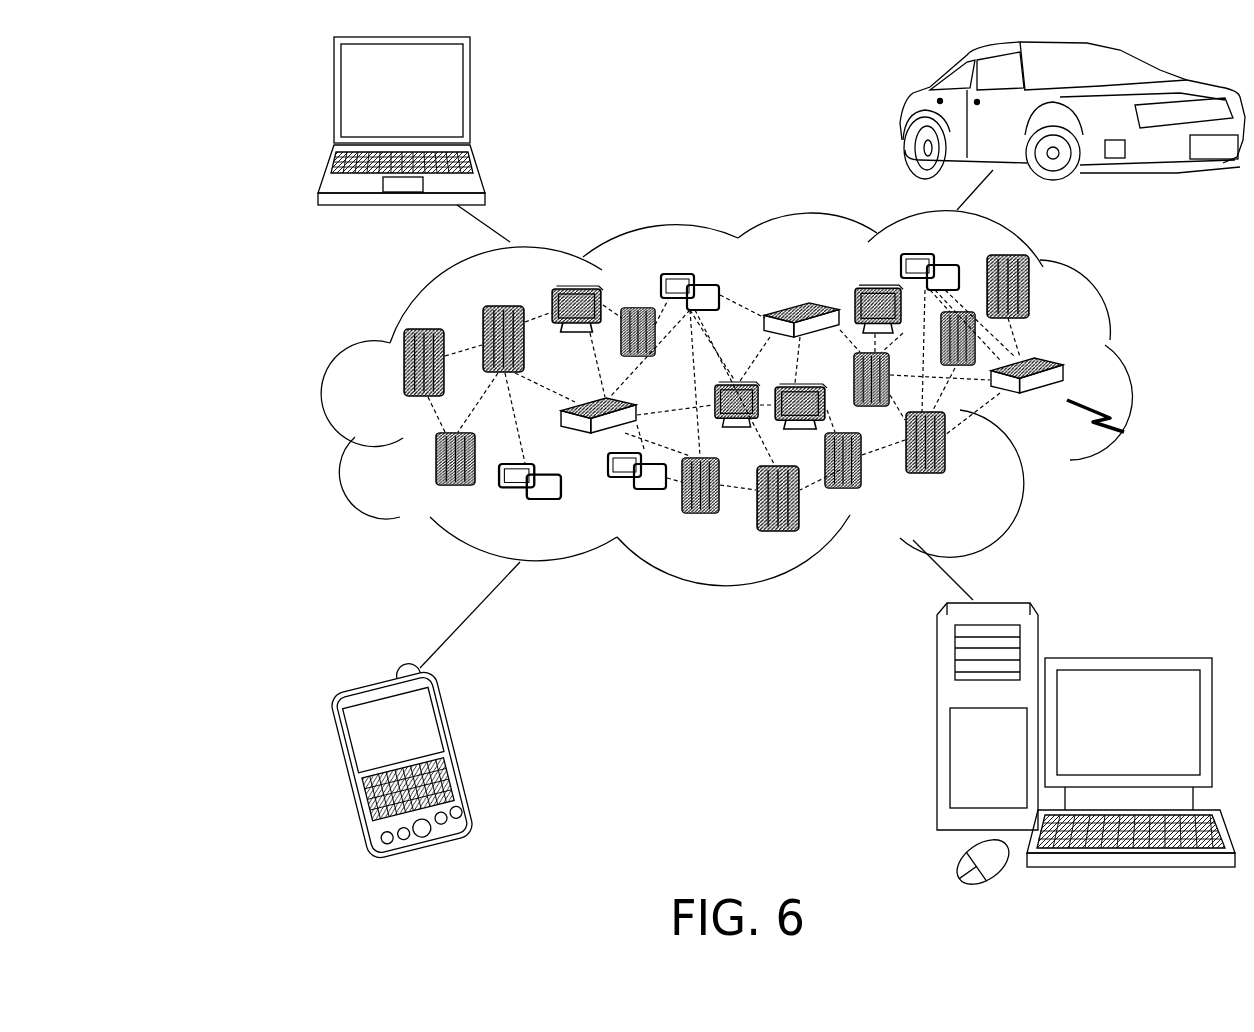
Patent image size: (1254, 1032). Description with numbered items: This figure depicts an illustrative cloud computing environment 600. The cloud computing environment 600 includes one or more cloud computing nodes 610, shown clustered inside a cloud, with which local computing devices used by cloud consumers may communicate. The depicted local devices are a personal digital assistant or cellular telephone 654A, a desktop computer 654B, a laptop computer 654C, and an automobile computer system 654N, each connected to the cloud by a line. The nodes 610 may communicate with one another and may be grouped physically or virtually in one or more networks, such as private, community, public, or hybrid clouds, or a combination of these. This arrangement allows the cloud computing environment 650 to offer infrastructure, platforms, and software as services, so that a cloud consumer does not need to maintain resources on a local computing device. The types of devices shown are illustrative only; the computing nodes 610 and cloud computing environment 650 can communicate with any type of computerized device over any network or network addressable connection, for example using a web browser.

The cloud computing environment 600 is at (166, 64).
The cloud computing nodes 610 is at (1121, 424).
The cloud computing environment 650 is at (1128, 373).
The personal digital assistant or cellular telephone 654A is at (463, 750).
The desktop computer 654B is at (1128, 657).
The laptop computer 654C is at (470, 103).
The automobile computer system 654N is at (910, 120).